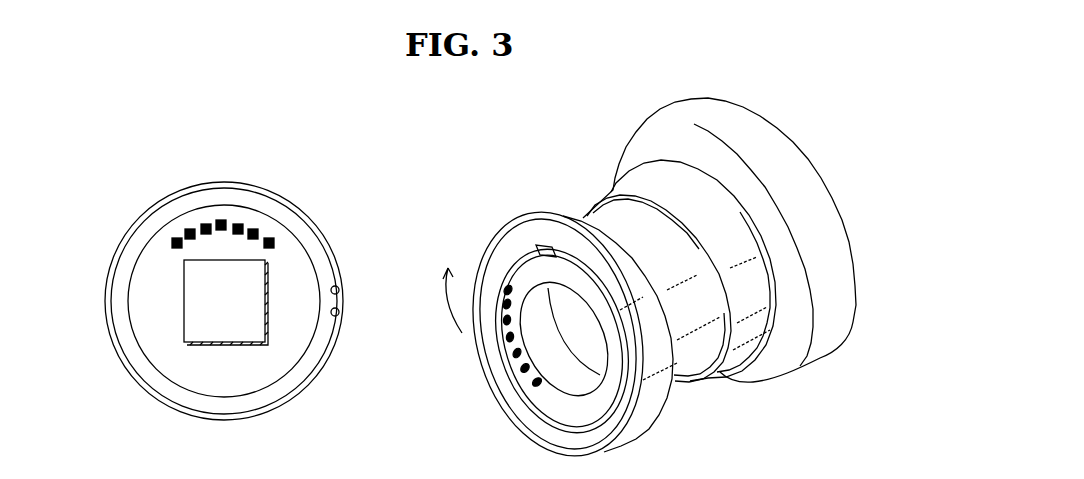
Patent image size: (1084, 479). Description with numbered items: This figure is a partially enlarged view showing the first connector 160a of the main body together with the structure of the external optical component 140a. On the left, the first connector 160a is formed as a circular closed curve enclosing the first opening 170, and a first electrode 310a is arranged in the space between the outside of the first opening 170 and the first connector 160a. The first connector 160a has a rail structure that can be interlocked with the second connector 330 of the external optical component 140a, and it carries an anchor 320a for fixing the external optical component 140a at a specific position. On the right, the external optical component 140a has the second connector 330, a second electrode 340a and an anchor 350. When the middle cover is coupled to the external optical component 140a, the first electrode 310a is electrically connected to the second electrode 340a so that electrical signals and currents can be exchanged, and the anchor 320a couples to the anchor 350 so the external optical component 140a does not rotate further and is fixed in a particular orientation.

The first connector 160a is at (227, 196).
The first electrode 310a is at (243, 226).
The anchor 320a is at (338, 317).
The first opening 170 is at (187, 343).
The external optical component 140a is at (780, 163).
The anchor 350 is at (539, 246).
The second connector 330 is at (482, 250).
The second electrode 340a is at (512, 360).